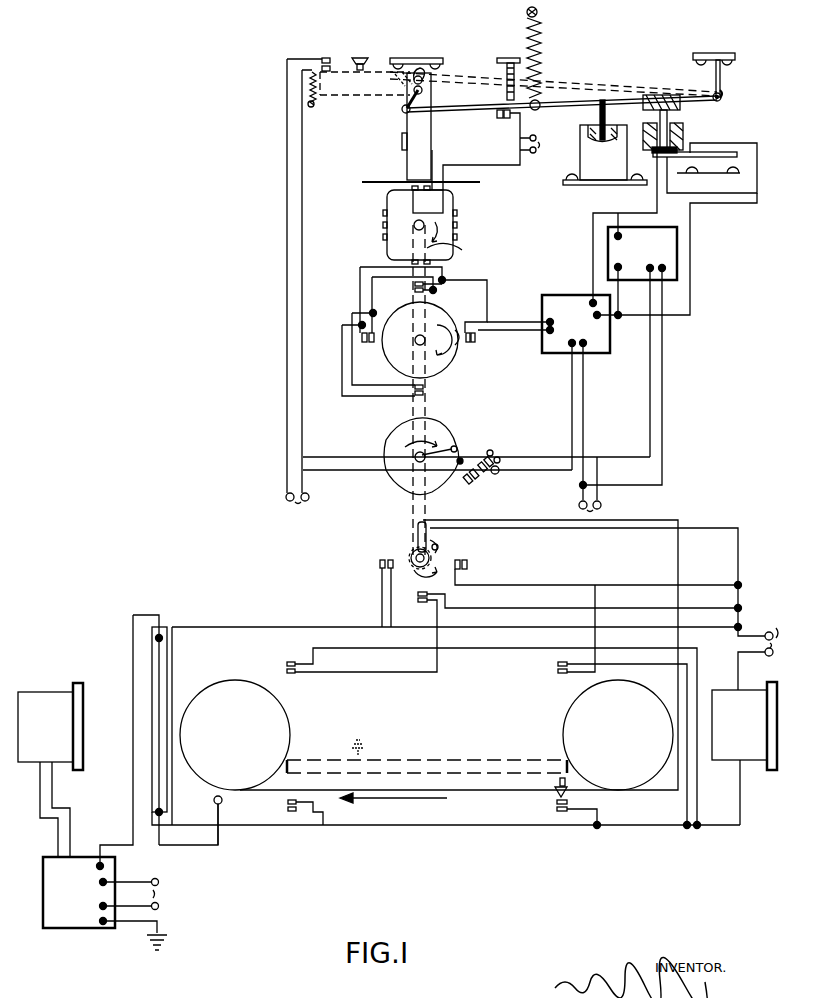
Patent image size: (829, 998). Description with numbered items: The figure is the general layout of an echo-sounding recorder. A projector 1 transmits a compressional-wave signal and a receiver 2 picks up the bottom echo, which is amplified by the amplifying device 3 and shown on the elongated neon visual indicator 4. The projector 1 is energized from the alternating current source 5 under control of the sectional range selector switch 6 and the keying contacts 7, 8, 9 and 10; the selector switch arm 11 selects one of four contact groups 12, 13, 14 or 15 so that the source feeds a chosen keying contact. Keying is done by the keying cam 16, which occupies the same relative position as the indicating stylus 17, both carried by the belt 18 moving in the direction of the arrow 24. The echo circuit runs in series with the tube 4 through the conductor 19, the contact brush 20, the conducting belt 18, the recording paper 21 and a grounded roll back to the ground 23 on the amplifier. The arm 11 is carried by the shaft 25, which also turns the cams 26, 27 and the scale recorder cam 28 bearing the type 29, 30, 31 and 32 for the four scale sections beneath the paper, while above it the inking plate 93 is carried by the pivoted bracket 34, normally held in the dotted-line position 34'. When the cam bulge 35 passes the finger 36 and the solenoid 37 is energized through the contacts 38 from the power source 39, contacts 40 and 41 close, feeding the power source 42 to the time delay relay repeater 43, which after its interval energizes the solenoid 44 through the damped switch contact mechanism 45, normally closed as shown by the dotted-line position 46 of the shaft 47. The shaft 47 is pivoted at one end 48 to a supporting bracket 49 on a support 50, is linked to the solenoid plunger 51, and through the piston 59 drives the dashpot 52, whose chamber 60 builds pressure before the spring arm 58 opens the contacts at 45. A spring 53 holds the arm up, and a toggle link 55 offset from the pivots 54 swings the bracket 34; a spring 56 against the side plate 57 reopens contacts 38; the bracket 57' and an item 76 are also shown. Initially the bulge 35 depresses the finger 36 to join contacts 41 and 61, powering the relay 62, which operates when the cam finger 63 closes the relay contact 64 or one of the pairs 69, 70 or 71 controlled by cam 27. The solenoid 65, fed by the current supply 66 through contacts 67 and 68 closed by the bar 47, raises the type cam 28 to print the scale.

The projector 1 is at (755, 762).
The receiver 2 is at (27, 698).
The amplifying device 3 is at (50, 928).
The visual indicator 4 is at (155, 660).
The alternating current source 5 is at (770, 628).
The sectional range selector switch 6 is at (404, 560).
The keying contacts 7 is at (557, 812).
The keying contacts 8 is at (566, 675).
The keying contacts 9 is at (296, 674).
The keying contacts 10 is at (282, 815).
The selector switch arm 11 is at (416, 540).
The contacts 12 is at (432, 522).
The contacts 13 is at (468, 569).
The contacts 14 is at (427, 602).
The contacts 15 is at (379, 570).
The keying cam 16 is at (575, 800).
The indicating stylus 17 is at (558, 780).
The belt 18 is at (280, 790).
The conductor 19 is at (196, 845).
The contact brush 20 is at (200, 777).
The recording paper 21 is at (365, 181).
The ground 23 is at (160, 922).
The arrow 24 is at (418, 796).
The shaft 25 is at (428, 405).
The cam 26 is at (386, 440).
The cam 27 is at (445, 318).
The scale recorder cam 28 is at (444, 203).
The type 29 is at (387, 200).
The type 30 is at (382, 228).
The type 31 is at (462, 250).
The type 32 is at (458, 232).
The pivoted bracket 34 is at (397, 126).
The dotted-line position 34' is at (365, 98).
The cam bulge 35 is at (440, 485).
The finger 36 is at (468, 480).
The solenoid 37 is at (462, 447).
The contacts 38 is at (330, 62).
The power source 39 is at (296, 506).
The contacts 40 is at (490, 450).
The contacts 41 is at (500, 458).
The power source 42 is at (602, 503).
The time delay relay repeater 43 is at (672, 250).
The solenoid 44 is at (594, 180).
The damped switch contact mechanism 45 is at (717, 150).
The dotted-line position 46 is at (660, 93).
The shaft 47 is at (614, 96).
The pivot 48 is at (723, 94).
The supporting bracket 49 is at (724, 91).
The casing or support 50 is at (718, 52).
The solenoid plunger 51 is at (598, 112).
The dashpot 52 is at (637, 143).
The spring 53 is at (545, 55).
The pivots 54 is at (425, 78).
The toggle link 55 is at (404, 102).
The spring 56 is at (366, 60).
The side plate 57 is at (386, 154).
The bracket 57' is at (553, 63).
The spring arm 58 is at (678, 158).
The piston 59 is at (668, 120).
The chamber 60 is at (686, 138).
The contact 61 is at (496, 474).
The relay 62 is at (560, 296).
The cam finger 63 is at (475, 342).
The relay contact 64 is at (492, 334).
The solenoid 65 is at (413, 207).
The current supply 66 is at (540, 144).
The contacts 67 is at (496, 114).
The contacts 68 is at (500, 122).
The contacts 69 is at (412, 386).
The contacts 70 is at (342, 344).
The contacts 71 is at (414, 291).
The belt edge 76 is at (290, 762).
The inking plate 93 is at (433, 172).